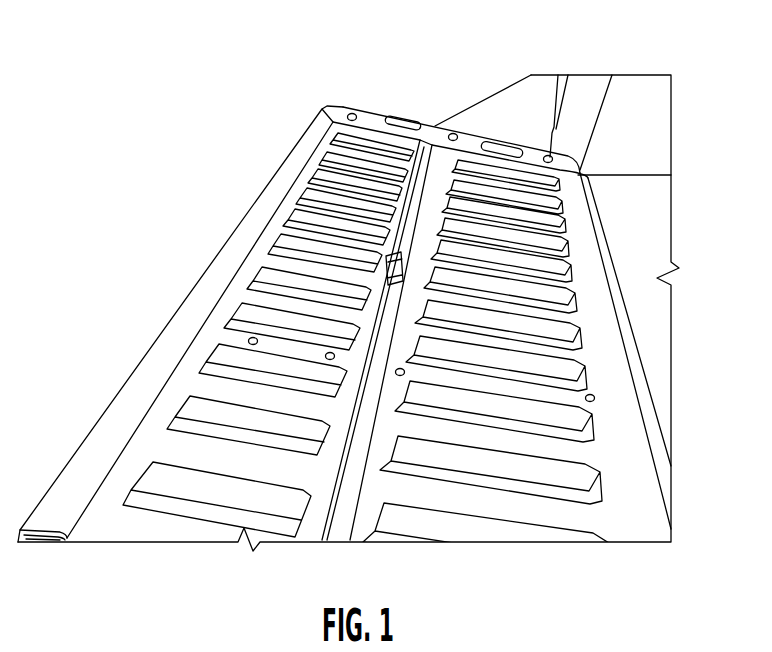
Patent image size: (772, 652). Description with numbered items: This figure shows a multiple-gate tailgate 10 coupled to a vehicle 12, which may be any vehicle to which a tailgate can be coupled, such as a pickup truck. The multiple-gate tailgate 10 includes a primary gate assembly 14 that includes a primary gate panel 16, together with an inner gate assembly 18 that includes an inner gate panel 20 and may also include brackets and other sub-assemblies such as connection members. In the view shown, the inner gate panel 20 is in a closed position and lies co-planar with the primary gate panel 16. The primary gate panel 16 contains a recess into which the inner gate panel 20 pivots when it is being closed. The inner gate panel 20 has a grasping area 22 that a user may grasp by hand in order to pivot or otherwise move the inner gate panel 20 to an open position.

The multiple-gate tailgate 10 is at (322, 97).
The vehicle 12 is at (651, 130).
The primary gate assembly 14 is at (435, 128).
The primary gate panel 16 is at (587, 262).
The inner gate assembly 18 is at (290, 230).
The inner gate panel 20 is at (250, 303).
The grasping area 22 is at (390, 258).